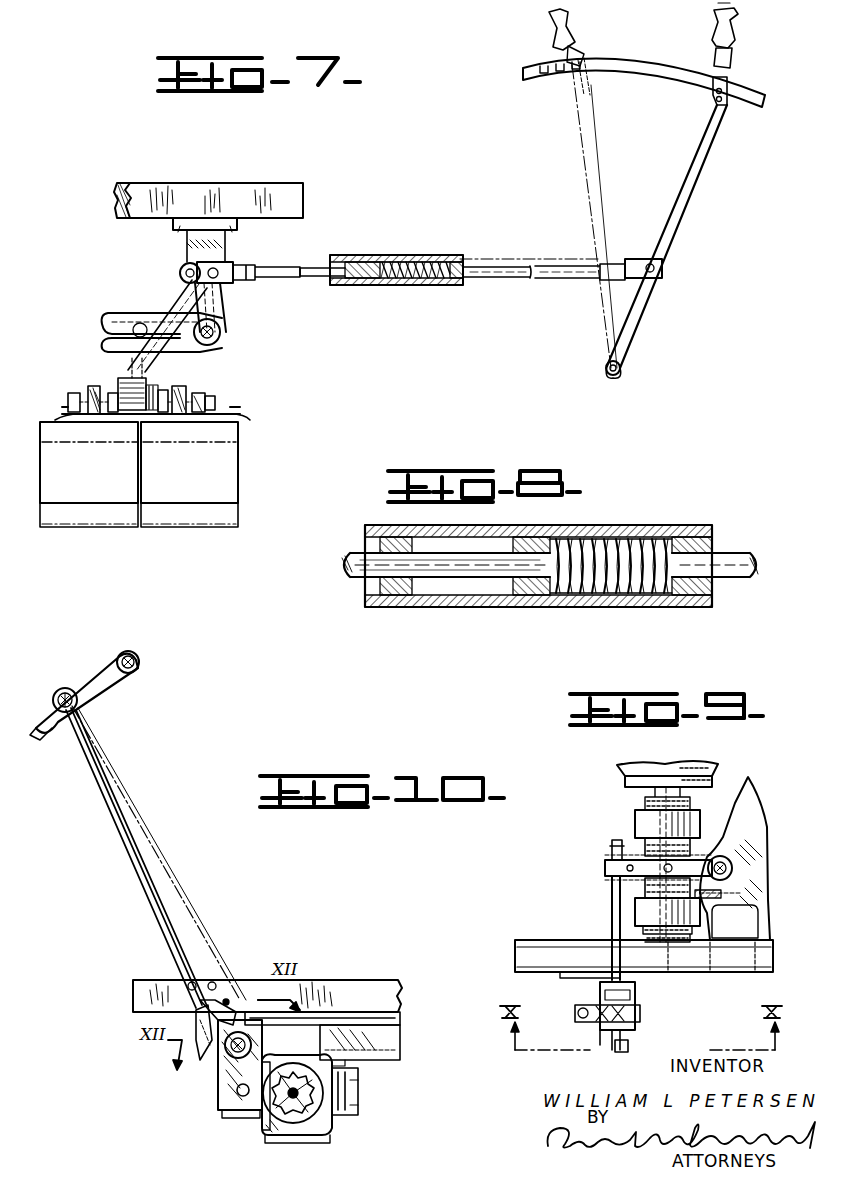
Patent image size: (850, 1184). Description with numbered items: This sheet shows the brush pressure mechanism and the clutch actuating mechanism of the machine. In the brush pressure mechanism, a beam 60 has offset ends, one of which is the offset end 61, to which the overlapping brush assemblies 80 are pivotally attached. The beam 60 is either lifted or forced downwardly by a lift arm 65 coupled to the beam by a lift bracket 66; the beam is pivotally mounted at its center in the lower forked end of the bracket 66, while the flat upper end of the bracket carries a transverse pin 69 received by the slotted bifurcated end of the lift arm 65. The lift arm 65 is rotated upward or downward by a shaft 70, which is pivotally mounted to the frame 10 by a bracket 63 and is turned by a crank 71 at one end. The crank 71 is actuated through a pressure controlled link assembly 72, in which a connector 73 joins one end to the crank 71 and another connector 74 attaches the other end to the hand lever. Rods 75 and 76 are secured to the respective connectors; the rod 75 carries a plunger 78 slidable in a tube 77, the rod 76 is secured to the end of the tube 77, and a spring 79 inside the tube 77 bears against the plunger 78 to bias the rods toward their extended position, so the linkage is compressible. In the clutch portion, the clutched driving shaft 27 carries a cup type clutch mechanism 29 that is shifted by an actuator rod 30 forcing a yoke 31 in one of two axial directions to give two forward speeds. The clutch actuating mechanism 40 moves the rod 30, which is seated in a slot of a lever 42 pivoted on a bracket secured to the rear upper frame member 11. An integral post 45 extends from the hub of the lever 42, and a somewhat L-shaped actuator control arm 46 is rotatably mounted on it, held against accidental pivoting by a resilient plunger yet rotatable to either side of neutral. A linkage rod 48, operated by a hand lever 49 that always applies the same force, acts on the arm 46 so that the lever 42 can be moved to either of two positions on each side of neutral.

In FIG. 7, the frame 10 is at (246, 196).
In FIG. 9, the rear upper frame member 11 is at (738, 958).
In FIG. 10, the rear upper frame member 11 is at (358, 988).
In FIG. 9, the clutched driving shaft 27 is at (672, 950).
In FIG. 9, the clutch mechanism 29 is at (704, 836).
In FIG. 10, the clutch mechanism 29 is at (316, 1116).
In FIG. 9, the actuator rod 30 is at (612, 907).
In FIG. 9, the yoke 31 is at (720, 836).
In FIG. 10, the yoke 31 is at (290, 1130).
In FIG. 9, the clutch actuating mechanism 40 is at (594, 997).
In FIG. 10, the clutch actuating mechanism 40 is at (210, 1072).
In FIG. 10, the lever 42 is at (230, 1095).
In FIG. 10, the post 45 is at (230, 1000).
In FIG. 10, the actuator control arm 46 is at (202, 1055).
In FIG. 10, the linkage rod 48 is at (113, 812).
In FIG. 10, the hand lever 49 is at (50, 712).
In FIG. 7, the beam 60 is at (168, 394).
In FIG. 7, the offset end 61 is at (206, 400).
In FIG. 7, the bracket 63 is at (184, 237).
In FIG. 7, the lift arm 65 is at (168, 325).
In FIG. 7, the lift bracket 66 is at (118, 372).
In FIG. 7, the transverse pin 69 is at (104, 330).
In FIG. 7, the shaft 70 is at (222, 332).
In FIG. 7, the crank 71 is at (226, 310).
In FIG. 7, the pressure controlled link assembly 72 is at (703, 130).
In FIG. 7, the connector 73 is at (222, 270).
In FIG. 7, the connector 74 is at (636, 264).
In FIG. 7, the rod 75 is at (318, 266).
In FIG. 8, the rod 75 is at (353, 560).
In FIG. 7, the rod 76 is at (516, 266).
In FIG. 8, the rod 76 is at (724, 560).
In FIG. 7, the tube 77 is at (392, 257).
In FIG. 8, the tube 77 is at (612, 530).
In FIG. 7, the plunger 78 is at (368, 284).
In FIG. 8, the plunger 78 is at (535, 596).
In FIG. 7, the spring 79 is at (424, 262).
In FIG. 8, the spring 79 is at (660, 556).
In FIG. 7, the brush assemblies 80 is at (222, 468).